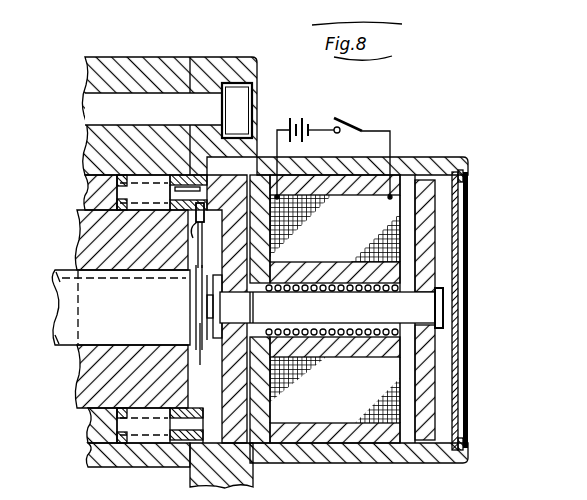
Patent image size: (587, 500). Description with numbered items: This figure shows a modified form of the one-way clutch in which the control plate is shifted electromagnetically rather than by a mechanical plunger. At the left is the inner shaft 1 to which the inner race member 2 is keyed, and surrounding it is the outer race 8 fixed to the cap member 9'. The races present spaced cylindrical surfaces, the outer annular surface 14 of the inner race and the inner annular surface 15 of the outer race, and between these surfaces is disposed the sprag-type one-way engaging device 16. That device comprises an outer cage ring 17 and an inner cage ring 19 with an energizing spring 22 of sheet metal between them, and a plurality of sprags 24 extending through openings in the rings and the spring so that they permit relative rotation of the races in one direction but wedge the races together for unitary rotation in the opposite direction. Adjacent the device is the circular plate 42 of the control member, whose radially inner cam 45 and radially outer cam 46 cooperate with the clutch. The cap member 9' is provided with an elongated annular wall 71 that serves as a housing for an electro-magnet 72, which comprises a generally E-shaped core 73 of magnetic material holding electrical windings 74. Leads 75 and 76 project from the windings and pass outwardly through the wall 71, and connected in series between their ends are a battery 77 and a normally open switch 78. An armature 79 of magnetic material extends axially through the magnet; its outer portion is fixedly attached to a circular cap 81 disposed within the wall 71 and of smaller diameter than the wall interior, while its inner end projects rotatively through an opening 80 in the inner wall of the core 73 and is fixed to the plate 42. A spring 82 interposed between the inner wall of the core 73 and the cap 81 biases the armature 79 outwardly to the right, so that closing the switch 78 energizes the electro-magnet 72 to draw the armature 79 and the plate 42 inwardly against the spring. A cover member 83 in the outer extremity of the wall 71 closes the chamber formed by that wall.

The inner shaft 1 is at (62, 293).
The inner race member 2 is at (85, 242).
The outer race 8 is at (86, 140).
The cap member 9' is at (169, 96).
The outer annular surface of the inner race 14 is at (145, 412).
The inner annular surface of the outer race 15 is at (155, 440).
The one-way engaging device 16 is at (148, 178).
The outer cage ring 17 is at (88, 188).
The inner cage ring 19 is at (88, 207).
The energizing spring 22 is at (90, 422).
The sprags 24 is at (128, 442).
The circular plate 42 is at (240, 410).
The radially inner cam 45 is at (194, 241).
The radially outer cam 46 is at (213, 177).
The annular wall 71 is at (446, 160).
The electro-magnet 72 is at (399, 378).
The core 73 is at (399, 270).
The electrical windings 74 is at (388, 412).
The lead 75 is at (393, 142).
The lead 76 is at (277, 130).
The battery 77 is at (303, 120).
The switch 78 is at (358, 125).
The armature 79 is at (410, 327).
The opening 80 is at (262, 292).
The circular cap 81 is at (428, 210).
The spring 82 is at (336, 290).
The cover member 83 is at (460, 287).